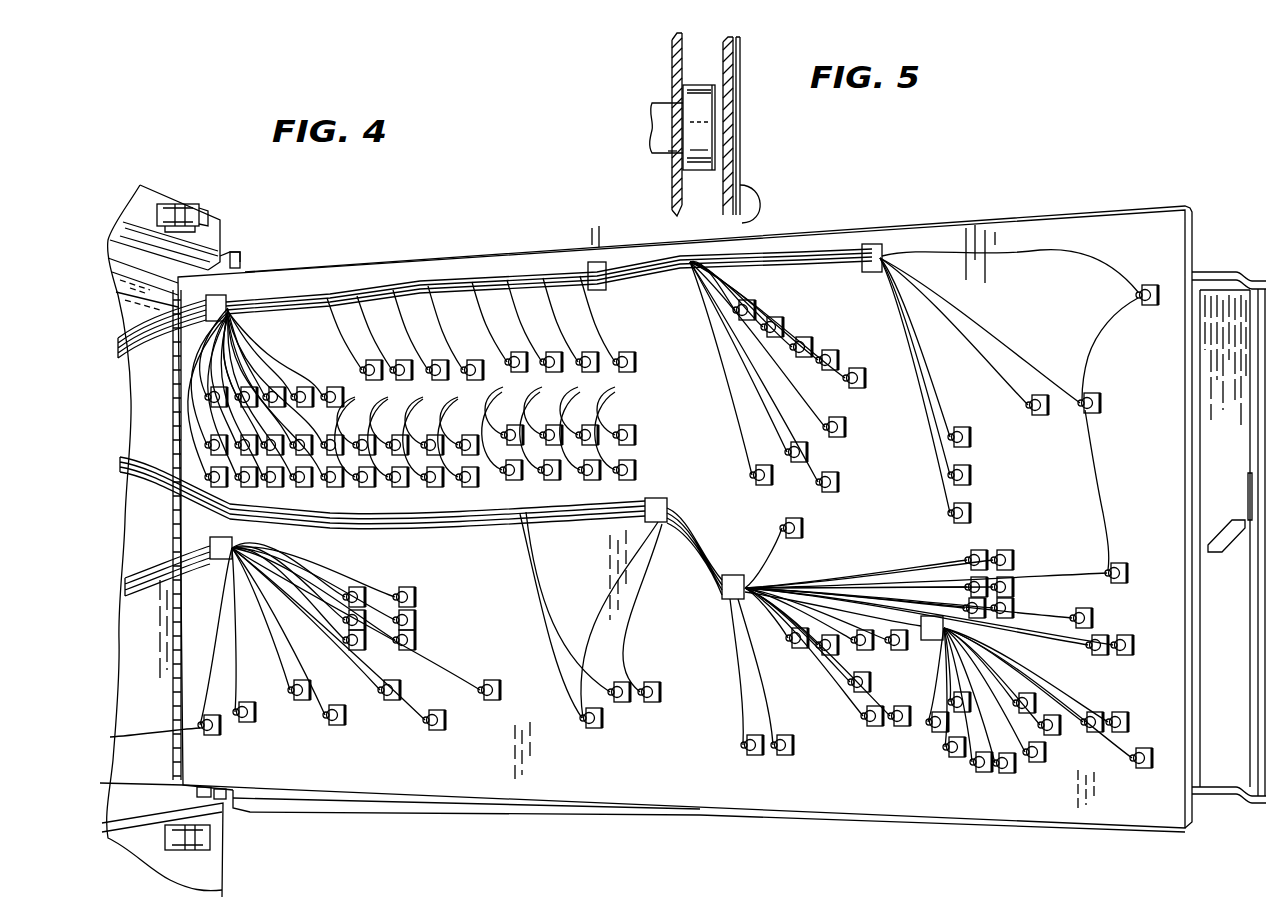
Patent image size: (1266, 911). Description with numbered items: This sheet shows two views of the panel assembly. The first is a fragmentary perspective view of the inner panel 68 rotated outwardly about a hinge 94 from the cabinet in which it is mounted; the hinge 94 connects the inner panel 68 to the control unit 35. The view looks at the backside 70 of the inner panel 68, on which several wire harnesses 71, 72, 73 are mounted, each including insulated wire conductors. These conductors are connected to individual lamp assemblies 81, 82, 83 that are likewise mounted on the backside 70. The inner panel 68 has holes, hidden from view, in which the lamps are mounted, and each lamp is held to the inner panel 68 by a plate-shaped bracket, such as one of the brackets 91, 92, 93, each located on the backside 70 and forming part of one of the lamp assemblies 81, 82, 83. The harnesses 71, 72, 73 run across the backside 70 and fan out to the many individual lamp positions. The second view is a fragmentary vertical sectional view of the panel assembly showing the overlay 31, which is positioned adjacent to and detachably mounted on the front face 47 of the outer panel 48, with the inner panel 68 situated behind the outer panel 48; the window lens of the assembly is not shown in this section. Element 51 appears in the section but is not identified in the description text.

In FIG. 5, the overlay 31 is at (741, 168).
In FIG. 4, the control unit 35 is at (218, 855).
In FIG. 5, the front face 47 is at (742, 222).
In FIG. 5, the outer panel 48 is at (737, 76).
In FIG. 5, the fastener block 51 is at (737, 125).
In FIG. 4, the inner panel 68 is at (340, 766).
In FIG. 4, the backside 70 is at (470, 590).
In FIG. 4, the wire harness 71 is at (200, 562).
In FIG. 4, the wire harness 72 is at (415, 535).
In FIG. 4, the wire harness 73 is at (497, 287).
In FIG. 4, the lamp assembly 81 is at (590, 735).
In FIG. 4, the lamp assembly 82 is at (655, 700).
In FIG. 4, the lamp assembly 83 is at (845, 684).
In FIG. 4, the bracket 91 is at (598, 722).
In FIG. 4, the bracket 92 is at (662, 690).
In FIG. 4, the bracket 93 is at (795, 632).
In FIG. 4, the hinge 94 is at (172, 418).